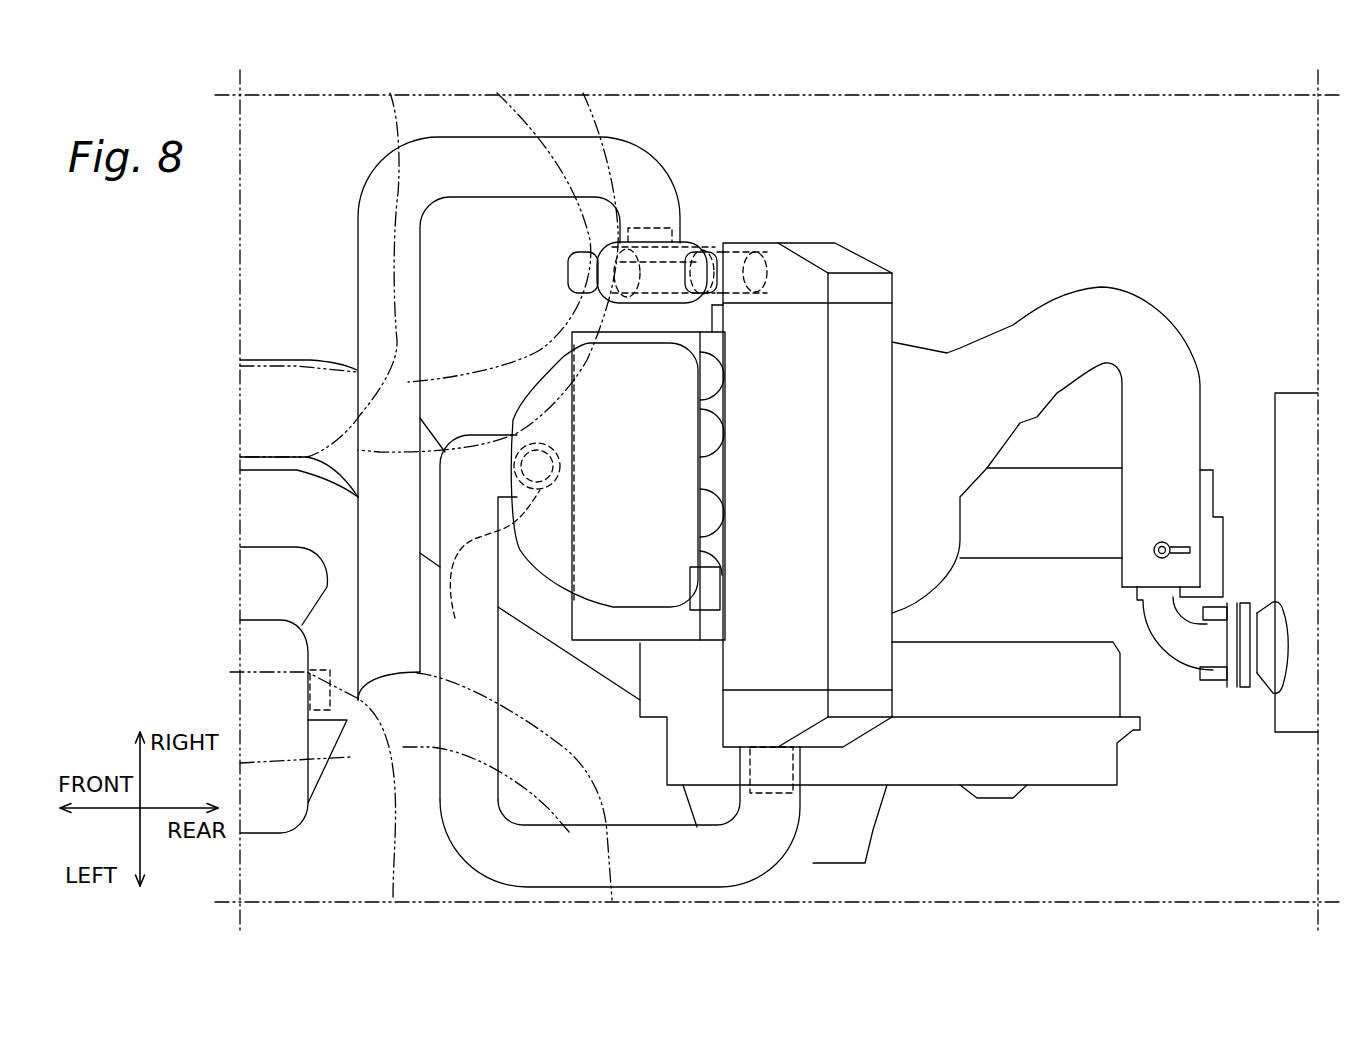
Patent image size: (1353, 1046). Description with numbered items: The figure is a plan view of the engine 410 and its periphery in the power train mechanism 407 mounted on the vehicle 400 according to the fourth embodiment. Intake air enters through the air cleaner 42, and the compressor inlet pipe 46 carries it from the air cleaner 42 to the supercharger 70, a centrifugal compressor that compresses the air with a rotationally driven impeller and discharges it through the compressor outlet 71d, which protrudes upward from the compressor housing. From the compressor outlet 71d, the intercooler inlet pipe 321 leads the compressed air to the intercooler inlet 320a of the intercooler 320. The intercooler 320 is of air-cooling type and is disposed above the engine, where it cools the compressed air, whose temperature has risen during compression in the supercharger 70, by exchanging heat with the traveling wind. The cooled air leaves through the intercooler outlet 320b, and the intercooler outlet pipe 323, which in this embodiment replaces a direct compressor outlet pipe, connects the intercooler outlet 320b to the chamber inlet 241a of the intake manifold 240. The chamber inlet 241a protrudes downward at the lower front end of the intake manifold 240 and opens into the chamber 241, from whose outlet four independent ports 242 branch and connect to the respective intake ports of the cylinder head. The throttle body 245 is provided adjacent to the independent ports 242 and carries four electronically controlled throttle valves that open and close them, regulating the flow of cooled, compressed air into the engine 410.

The air cleaner 42 is at (247, 640).
The compressor inlet pipe 46 is at (358, 293).
The supercharger 70 is at (597, 252).
The compressor outlet 71d is at (587, 302).
The intake manifold 240 is at (507, 603).
The chamber 241 is at (618, 472).
The chamber inlet 241a is at (558, 597).
The independent ports 242 is at (700, 517).
The throttle body 245 is at (697, 603).
The intercooler 320 is at (807, 495).
The intercooler inlet 320a is at (713, 248).
The intercooler outlet 320b is at (772, 793).
The intercooler inlet pipe 321 is at (650, 227).
The intercooler outlet pipe 323 is at (640, 833).
The vehicle 400 is at (1087, 237).
The power train mechanism 407 is at (878, 256).
The engine 410 is at (796, 226).